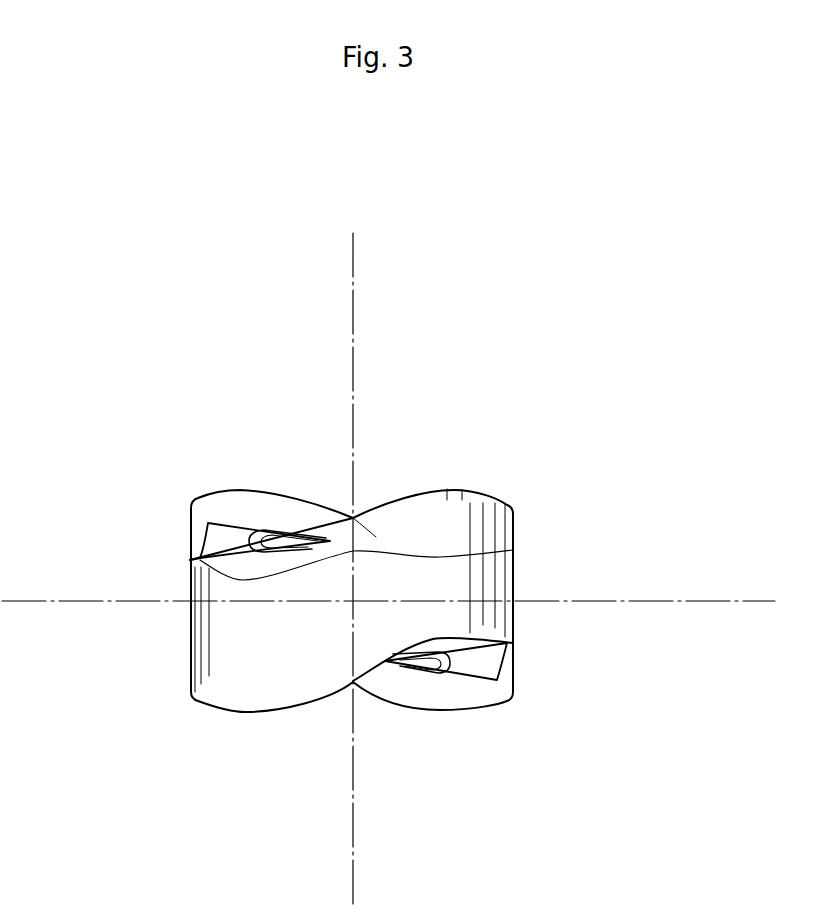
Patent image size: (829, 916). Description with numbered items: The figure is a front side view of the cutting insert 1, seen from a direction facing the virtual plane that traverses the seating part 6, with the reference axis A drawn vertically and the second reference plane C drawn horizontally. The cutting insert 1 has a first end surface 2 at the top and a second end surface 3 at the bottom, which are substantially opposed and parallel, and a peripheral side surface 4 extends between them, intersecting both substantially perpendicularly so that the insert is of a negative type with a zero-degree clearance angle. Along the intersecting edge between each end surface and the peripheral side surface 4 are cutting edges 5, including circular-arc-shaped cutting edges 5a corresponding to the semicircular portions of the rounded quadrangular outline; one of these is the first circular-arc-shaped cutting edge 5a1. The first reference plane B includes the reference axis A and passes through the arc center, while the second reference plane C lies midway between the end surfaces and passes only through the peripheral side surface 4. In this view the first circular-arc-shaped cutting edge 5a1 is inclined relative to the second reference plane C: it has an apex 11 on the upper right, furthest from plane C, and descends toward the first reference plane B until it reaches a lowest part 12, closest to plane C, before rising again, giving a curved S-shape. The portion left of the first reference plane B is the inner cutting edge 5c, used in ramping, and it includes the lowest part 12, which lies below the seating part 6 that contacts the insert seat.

The cutting insert 1 is at (78, 324).
The first end surface 2 is at (235, 533).
The second end surface 3 is at (477, 665).
The peripheral side surface 4 is at (190, 640).
The cutting edges 5 is at (490, 495).
The circular-arc-shaped cutting edges 5a is at (477, 490).
The first circular-arc-shaped cutting edge 5a1 is at (462, 488).
The inner cutting edge 5c is at (513, 550).
The seating part 6 is at (248, 547).
The apex 11 is at (447, 488).
The lowest part 12 is at (203, 557).
The reference axis A is at (353, 260).
The first reference plane B is at (353, 315).
The second reference plane C is at (732, 602).